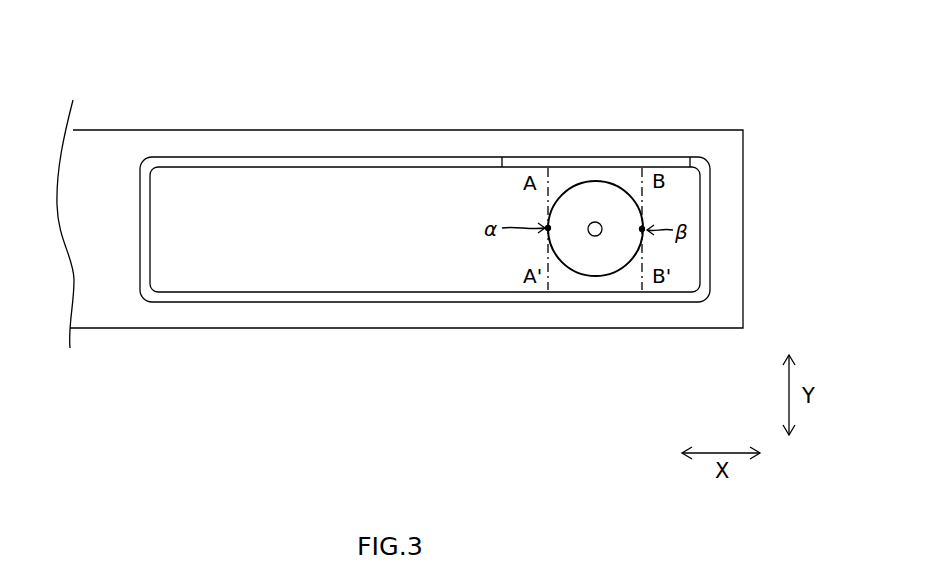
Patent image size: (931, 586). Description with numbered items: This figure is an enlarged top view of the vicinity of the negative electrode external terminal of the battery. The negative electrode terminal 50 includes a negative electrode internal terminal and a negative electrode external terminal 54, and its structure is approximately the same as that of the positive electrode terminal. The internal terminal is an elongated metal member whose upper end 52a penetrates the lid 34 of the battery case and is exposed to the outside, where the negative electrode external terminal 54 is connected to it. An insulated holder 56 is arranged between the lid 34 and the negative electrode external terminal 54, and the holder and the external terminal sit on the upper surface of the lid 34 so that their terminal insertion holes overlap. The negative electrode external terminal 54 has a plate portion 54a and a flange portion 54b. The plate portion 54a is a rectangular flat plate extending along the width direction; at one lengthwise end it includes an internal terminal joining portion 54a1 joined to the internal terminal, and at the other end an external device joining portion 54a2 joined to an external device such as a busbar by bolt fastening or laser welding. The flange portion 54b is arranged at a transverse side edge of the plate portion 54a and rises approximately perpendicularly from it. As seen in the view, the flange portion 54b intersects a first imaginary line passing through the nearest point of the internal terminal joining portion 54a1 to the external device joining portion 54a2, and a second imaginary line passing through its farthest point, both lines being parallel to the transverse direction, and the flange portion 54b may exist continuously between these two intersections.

The lid 34 is at (102, 172).
The negative electrode terminal 50 is at (707, 82).
The upper end of negative electrode internal terminal 52a is at (593, 190).
The negative electrode external terminal 54 is at (528, 62).
The plate portion 54a is at (425, 224).
The internal terminal joining portion 54a1 is at (595, 257).
The external device joining portion 54a2 is at (340, 263).
The flange portion 54b is at (518, 160).
The insulated holder 56 is at (202, 163).